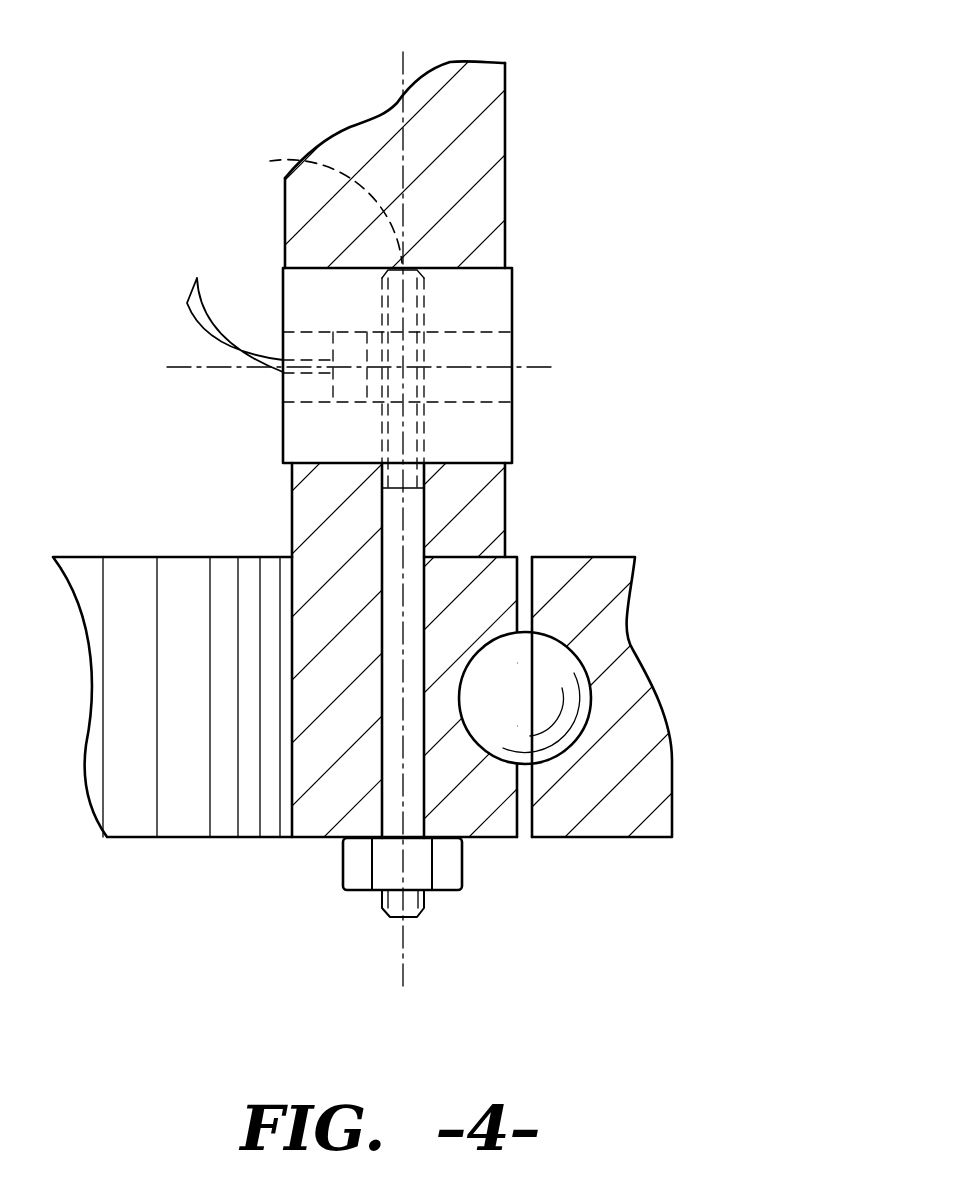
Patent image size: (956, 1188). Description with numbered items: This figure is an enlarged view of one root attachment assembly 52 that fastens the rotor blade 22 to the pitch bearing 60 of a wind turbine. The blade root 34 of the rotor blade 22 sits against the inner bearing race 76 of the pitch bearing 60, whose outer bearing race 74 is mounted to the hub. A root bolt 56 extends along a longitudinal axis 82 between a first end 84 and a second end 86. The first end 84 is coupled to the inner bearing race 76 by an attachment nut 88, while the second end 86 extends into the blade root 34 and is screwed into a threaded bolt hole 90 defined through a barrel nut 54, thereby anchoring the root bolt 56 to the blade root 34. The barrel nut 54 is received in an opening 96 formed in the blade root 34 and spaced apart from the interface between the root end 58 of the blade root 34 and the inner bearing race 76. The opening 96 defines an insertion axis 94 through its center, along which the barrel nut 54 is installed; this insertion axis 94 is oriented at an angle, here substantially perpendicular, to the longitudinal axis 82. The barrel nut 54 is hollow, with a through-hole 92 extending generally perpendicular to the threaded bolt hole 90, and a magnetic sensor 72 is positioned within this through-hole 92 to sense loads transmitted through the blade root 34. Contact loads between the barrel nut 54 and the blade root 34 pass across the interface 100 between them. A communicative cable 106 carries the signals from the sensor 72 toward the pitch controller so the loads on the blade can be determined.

The rotor blade 22 is at (505, 101).
The blade root 34 is at (487, 137).
The second end 86 is at (314, 201).
The opening 96 is at (440, 268).
The root attachment assembly 52 is at (270, 442).
The through-hole 92 is at (483, 332).
The threaded bolt hole 90 is at (423, 420).
The insertion axis 94 is at (528, 367).
The magnetic sensor 72 is at (290, 343).
The communicative cable 106 is at (190, 322).
The barrel nut 54 is at (342, 433).
The interface 100 is at (473, 463).
The root bolt 56 is at (381, 746).
The root end 58 is at (468, 560).
The inner bearing race 76 is at (492, 805).
The pitch bearing 60 is at (665, 713).
The outer bearing race 74 is at (638, 817).
The attachment nut 88 is at (360, 865).
The first end 84 is at (422, 912).
The longitudinal axis 82 is at (403, 943).